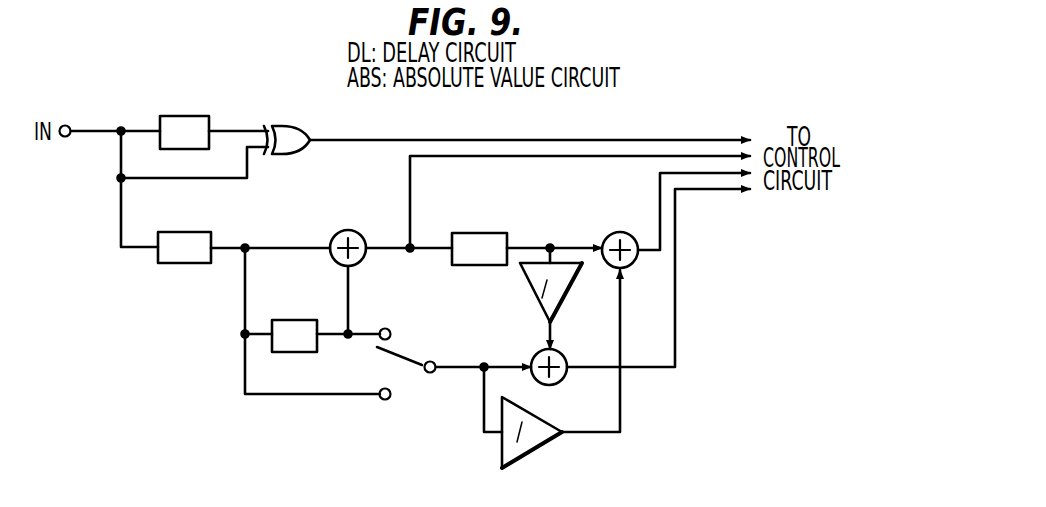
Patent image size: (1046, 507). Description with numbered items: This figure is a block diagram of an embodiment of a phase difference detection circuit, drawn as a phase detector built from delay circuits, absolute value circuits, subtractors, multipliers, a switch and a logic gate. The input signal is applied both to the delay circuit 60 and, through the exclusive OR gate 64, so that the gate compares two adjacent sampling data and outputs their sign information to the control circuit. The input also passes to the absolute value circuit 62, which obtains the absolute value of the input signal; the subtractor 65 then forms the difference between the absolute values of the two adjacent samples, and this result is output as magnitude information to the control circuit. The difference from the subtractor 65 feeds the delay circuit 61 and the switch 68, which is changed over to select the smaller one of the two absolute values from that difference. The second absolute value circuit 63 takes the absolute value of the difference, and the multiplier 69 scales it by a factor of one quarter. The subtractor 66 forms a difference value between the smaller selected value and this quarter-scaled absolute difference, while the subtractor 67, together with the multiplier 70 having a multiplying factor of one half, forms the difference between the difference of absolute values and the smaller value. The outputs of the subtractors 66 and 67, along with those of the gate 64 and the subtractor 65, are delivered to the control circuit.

The delay circuit 60 is at (168, 116).
The delay circuit 61 is at (283, 320).
The absolute value circuit 62 is at (190, 231).
The absolute value circuit 63 is at (482, 233).
The exclusive OR gate 64 is at (292, 127).
The subtractor 65 is at (350, 230).
The subtractor 66 is at (634, 265).
The subtractor 67 is at (566, 382).
The switch 68 is at (410, 370).
The multiplier 69 is at (530, 282).
The multiplier 70 is at (555, 444).